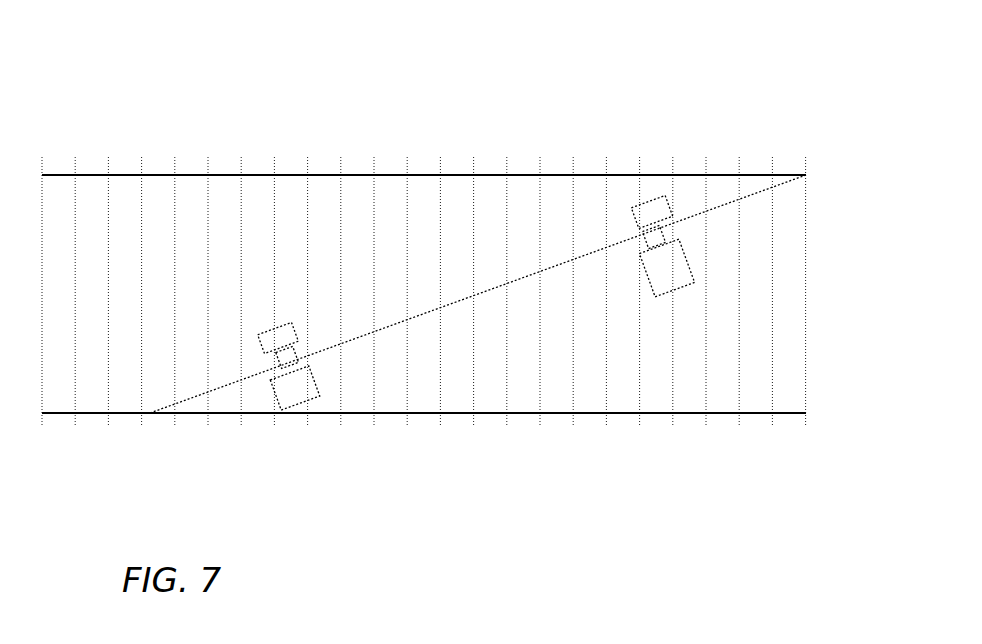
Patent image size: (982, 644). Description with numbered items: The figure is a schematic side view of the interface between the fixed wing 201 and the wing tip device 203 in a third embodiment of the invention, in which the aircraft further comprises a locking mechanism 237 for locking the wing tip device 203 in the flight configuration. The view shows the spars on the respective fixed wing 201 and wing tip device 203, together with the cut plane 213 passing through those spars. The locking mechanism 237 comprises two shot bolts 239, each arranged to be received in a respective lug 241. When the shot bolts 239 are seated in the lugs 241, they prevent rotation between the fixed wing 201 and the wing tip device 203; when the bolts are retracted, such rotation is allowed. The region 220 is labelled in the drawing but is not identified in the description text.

The fixed wing 201 is at (745, 425).
The wing tip device 203 is at (415, 162).
The region between boundary lines 220 is at (228, 212).
The cut plane 213 is at (770, 186).
The lug 241 is at (634, 216).
The shot bolt 239 is at (656, 222).
The locking mechanism 237 is at (670, 270).